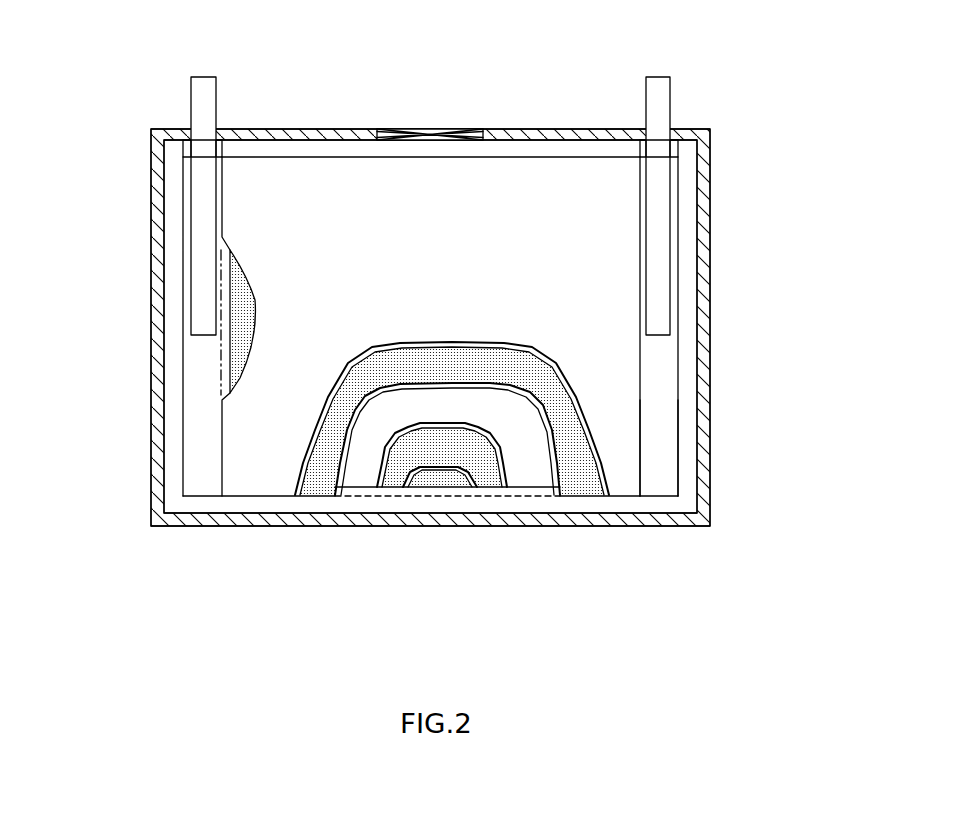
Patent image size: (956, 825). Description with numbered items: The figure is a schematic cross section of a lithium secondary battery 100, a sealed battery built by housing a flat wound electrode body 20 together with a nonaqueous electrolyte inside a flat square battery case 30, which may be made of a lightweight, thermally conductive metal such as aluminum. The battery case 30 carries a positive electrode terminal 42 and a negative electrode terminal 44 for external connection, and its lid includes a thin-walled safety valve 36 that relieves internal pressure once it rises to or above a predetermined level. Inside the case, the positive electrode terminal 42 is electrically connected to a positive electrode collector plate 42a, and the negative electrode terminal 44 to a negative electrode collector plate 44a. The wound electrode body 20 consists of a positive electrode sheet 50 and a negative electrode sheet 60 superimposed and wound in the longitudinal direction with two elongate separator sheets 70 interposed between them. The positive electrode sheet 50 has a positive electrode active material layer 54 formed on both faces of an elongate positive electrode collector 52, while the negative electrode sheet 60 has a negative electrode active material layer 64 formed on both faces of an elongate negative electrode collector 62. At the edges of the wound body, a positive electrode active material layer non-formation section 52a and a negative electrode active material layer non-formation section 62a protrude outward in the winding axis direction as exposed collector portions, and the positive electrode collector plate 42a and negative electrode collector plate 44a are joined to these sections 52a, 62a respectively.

The lithium secondary battery 100 is at (711, 93).
The wound electrode body 20 is at (318, 188).
The battery case 30 is at (710, 240).
The safety valve 36 is at (431, 129).
The positive electrode terminal 42 is at (206, 77).
The positive electrode collector plate 42a is at (201, 228).
The negative electrode terminal 44 is at (657, 77).
The negative electrode collector plate 44a is at (658, 188).
The positive electrode sheet 50 is at (317, 480).
The positive electrode collector 52 is at (183, 389).
The positive electrode active material layer non-formation section 52a is at (200, 472).
The positive electrode active material layer 54 is at (244, 294).
The negative electrode sheet 60 is at (393, 480).
The negative electrode collector 62 is at (679, 351).
The negative electrode active material layer non-formation section 62a is at (665, 395).
The negative electrode active material layer 64 is at (440, 477).
The separator sheet 70 is at (254, 432).